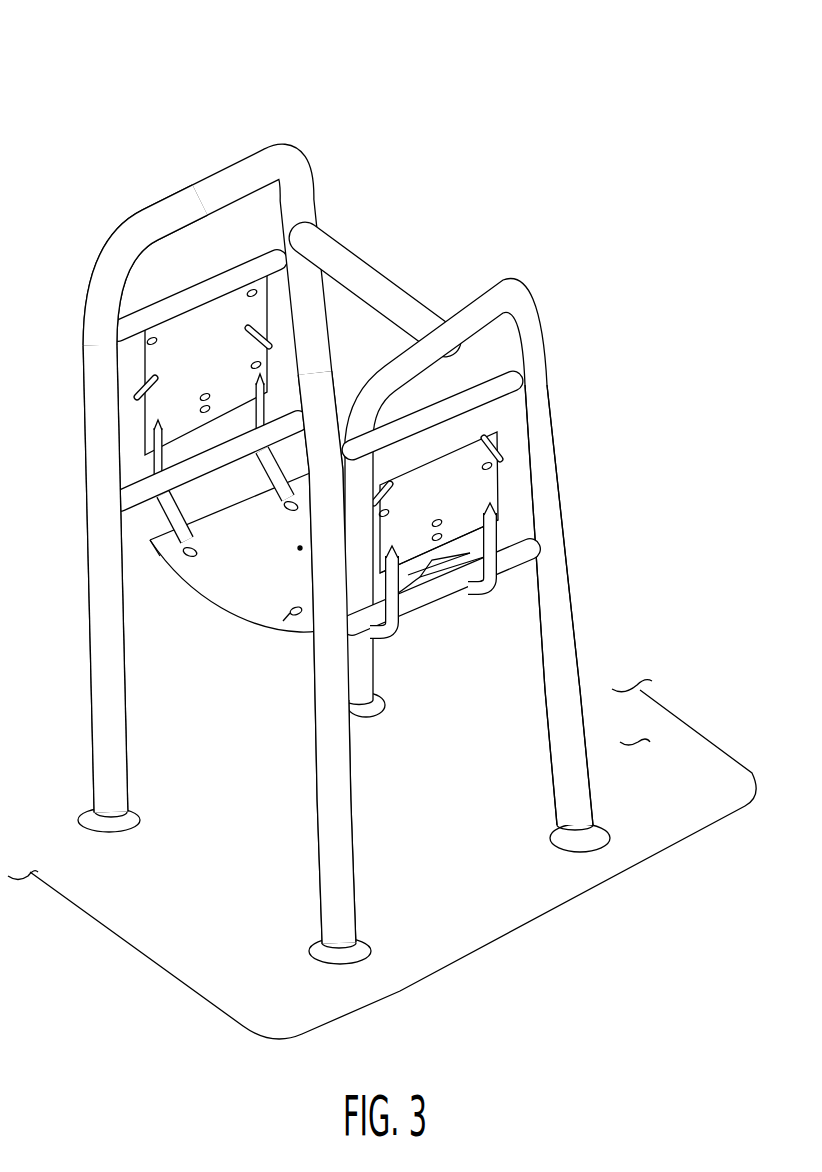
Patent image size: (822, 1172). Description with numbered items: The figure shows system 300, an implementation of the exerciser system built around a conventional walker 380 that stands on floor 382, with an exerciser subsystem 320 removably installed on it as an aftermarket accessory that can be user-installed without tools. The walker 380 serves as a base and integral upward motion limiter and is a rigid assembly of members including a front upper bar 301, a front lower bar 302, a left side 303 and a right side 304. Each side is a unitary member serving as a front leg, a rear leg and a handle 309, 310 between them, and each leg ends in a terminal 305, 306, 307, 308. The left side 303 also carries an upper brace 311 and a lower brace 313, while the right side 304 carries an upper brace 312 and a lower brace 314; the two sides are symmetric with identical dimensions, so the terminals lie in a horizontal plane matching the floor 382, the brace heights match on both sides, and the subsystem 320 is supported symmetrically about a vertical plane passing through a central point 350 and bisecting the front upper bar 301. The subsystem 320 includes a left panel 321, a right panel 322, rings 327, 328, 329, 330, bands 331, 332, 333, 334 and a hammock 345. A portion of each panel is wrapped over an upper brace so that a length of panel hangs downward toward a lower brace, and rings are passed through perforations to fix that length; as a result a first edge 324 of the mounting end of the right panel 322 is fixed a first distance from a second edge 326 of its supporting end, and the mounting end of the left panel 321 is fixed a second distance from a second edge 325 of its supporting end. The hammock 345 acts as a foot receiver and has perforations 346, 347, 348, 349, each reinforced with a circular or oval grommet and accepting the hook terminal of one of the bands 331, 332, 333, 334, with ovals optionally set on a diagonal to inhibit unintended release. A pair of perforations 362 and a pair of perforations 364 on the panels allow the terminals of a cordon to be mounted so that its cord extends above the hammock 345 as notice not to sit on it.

The system 300 is at (92, 70).
The front upper bar 301 is at (378, 268).
The front lower bar 302 is at (535, 627).
The left side 303 is at (83, 432).
The right side 304 is at (315, 781).
The terminal 305 is at (138, 829).
The terminal 306 is at (372, 720).
The terminal 307 is at (310, 955).
The terminal 308 is at (551, 838).
The handle 309 is at (179, 524).
The handle 310 is at (469, 525).
The upper brace 311 is at (272, 248).
The upper brace 312 is at (504, 375).
The lower brace 313 is at (129, 512).
The lower brace 314 is at (535, 562).
The subsystem 320 is at (321, 603).
The left panel 321 is at (201, 351).
The right panel 322 is at (492, 477).
The first edge 324 is at (427, 490).
The second edge 325 is at (158, 464).
The second edge 326 is at (425, 553).
The ring 327 is at (140, 392).
The ring 328 is at (268, 335).
The ring 329 is at (500, 440).
The ring 330 is at (497, 462).
The band 331 is at (129, 489).
The band 332 is at (245, 495).
The band 333 is at (378, 638).
The band 334 is at (483, 594).
The hammock 345 is at (240, 613).
The perforation 346 is at (170, 565).
The perforation 347 is at (285, 505).
The perforation 348 is at (292, 616).
The perforation 349 is at (415, 565).
The central point 350 is at (298, 551).
The pair of perforations 362 is at (213, 378).
The pair of perforations 364 is at (453, 522).
The conventional walker 380 is at (146, 210).
The floor 382 is at (650, 742).